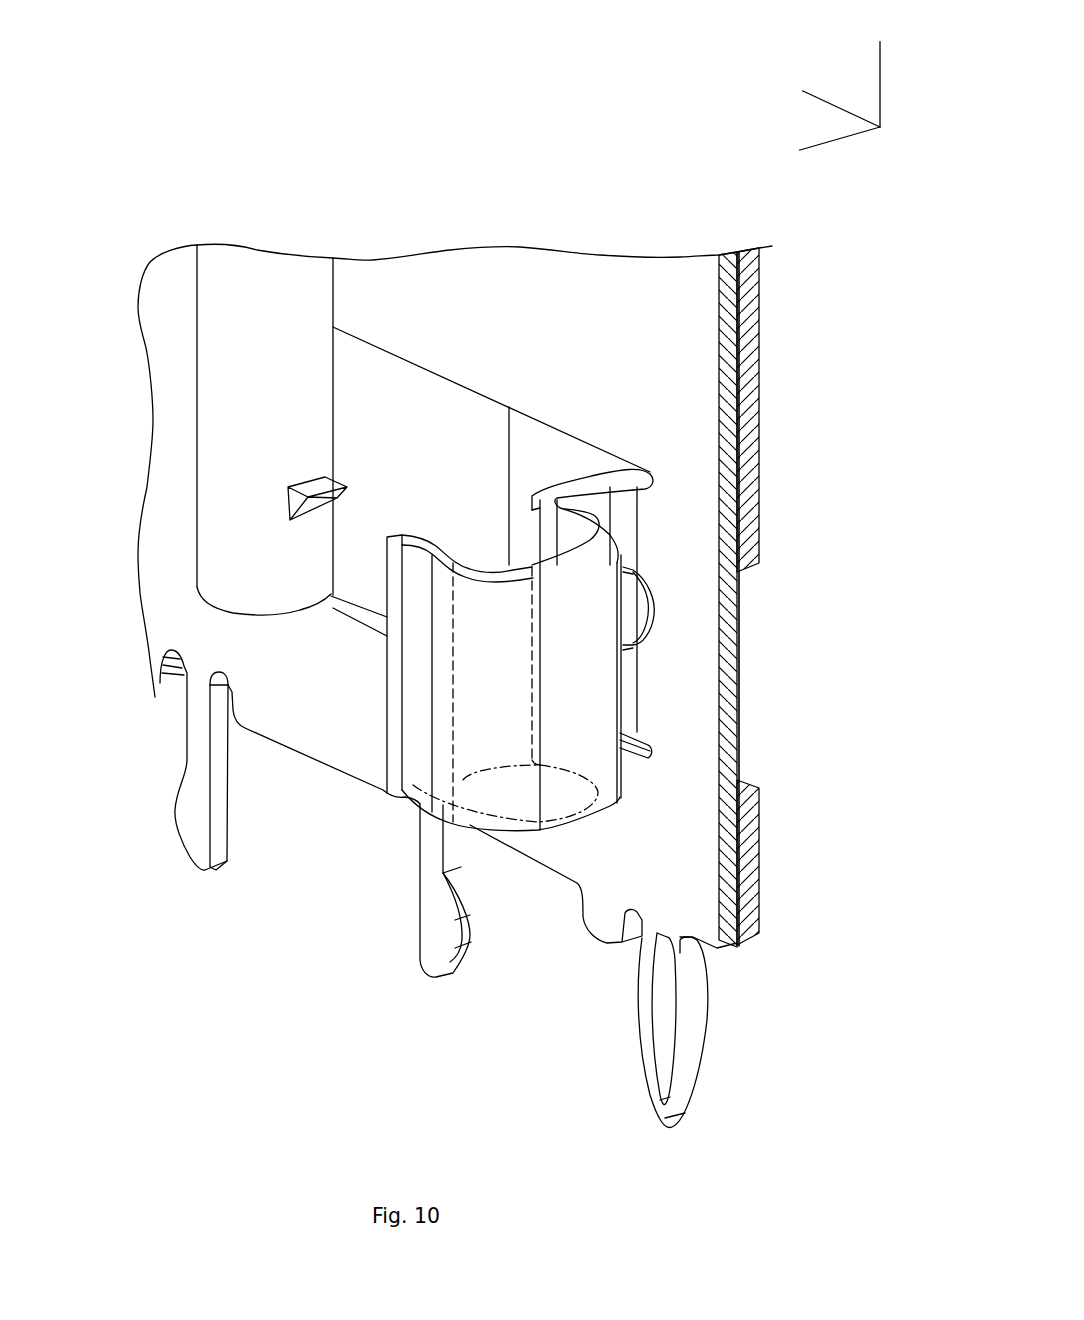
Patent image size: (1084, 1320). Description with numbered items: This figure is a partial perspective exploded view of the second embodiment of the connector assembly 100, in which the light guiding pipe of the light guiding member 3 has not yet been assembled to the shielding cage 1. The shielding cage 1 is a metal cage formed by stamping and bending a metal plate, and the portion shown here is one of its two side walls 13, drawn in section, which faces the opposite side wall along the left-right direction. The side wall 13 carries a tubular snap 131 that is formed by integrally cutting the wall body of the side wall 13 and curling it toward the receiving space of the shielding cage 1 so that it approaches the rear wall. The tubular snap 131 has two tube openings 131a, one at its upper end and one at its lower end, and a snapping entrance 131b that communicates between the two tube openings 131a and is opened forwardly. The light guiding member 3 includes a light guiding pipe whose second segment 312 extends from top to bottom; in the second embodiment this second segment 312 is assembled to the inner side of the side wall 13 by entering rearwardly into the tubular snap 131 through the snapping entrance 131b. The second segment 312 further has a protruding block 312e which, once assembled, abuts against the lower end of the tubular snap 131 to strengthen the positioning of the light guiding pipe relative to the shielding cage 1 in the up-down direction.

The connector assembly 100 is at (150, 191).
The shielding cage 1 is at (764, 335).
The side wall 13 is at (739, 652).
The tubular snap 131 is at (592, 702).
The tube opening 131a is at (475, 555).
The snapping entrance 131b is at (532, 618).
The light guiding member 3 is at (343, 288).
The second segment 312 is at (303, 425).
The protruding block 312e is at (318, 502).